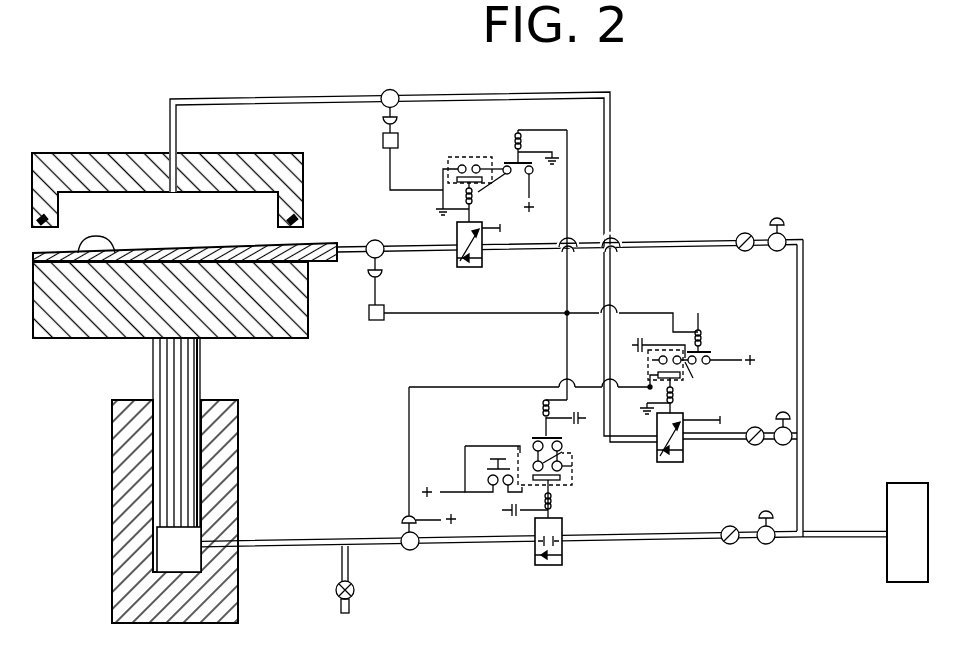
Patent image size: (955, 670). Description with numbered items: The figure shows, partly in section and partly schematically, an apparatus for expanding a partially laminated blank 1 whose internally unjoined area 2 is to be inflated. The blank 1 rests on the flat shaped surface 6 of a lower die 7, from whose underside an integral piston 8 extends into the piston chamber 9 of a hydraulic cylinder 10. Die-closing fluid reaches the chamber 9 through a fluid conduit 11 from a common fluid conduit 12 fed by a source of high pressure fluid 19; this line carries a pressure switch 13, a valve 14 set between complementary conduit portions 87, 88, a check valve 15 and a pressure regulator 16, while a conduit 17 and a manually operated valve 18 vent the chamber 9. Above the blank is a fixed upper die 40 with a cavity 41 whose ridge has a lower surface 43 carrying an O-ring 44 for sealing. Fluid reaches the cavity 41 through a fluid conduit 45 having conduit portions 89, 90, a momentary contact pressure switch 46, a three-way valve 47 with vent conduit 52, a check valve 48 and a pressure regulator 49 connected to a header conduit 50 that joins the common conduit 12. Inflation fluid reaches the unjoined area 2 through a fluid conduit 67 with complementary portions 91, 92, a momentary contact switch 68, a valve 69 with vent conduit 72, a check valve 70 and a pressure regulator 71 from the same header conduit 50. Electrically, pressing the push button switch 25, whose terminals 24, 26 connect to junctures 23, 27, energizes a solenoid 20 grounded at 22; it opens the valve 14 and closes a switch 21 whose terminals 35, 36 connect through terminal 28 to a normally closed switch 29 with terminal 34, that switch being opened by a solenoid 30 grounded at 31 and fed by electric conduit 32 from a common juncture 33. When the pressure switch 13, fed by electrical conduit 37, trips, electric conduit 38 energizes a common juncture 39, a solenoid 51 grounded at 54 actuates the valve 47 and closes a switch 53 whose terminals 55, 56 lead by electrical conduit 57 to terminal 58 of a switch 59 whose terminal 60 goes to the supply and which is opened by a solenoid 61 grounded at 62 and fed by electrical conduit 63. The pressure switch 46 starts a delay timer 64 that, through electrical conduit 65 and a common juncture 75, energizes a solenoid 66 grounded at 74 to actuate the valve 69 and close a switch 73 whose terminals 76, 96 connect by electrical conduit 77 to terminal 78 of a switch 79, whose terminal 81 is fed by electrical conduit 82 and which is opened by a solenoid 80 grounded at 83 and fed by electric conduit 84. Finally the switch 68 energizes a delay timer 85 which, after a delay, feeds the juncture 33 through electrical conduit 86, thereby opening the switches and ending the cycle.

The blank 1 is at (151, 252).
The internally unjoined or partially laminated area 2 is at (96, 241).
The shaped surface 6 is at (36, 274).
The die 7 is at (58, 340).
The piston 8 is at (189, 376).
The piston chamber 9 is at (184, 554).
The hydraulic cylinder 10 is at (113, 491).
The fluid conduit 11 is at (282, 543).
The common fluid conduit 12 is at (840, 540).
The pressure switch 13 is at (411, 552).
The valve 14 is at (545, 566).
The check valve 15 is at (730, 546).
The pressure regulator 16 is at (766, 546).
The conduit 17 is at (342, 568).
The manually operated valve 18 is at (335, 597).
The source of high pressure fluid 19 is at (896, 583).
The solenoid 20 is at (552, 503).
The electric switch 21 is at (573, 480).
The ground 22 is at (509, 512).
The common juncture 23 is at (546, 497).
The terminal 24 is at (509, 457).
The manually operated push button switch 25 is at (497, 457).
The terminal 26 is at (489, 475).
The common juncture 27 is at (468, 494).
The terminal 28 is at (561, 448).
The electric switch 29 is at (535, 437).
The solenoid 30 is at (543, 405).
The ground 31 is at (584, 419).
The electric conduit 32 is at (565, 357).
The common juncture 33 is at (565, 315).
The terminal 34 is at (533, 448).
The terminal 35 is at (564, 462).
The terminal 36 is at (566, 467).
The electrical conduit 37 is at (425, 525).
The electric conduit 38 is at (457, 387).
The common juncture 39 is at (648, 388).
The upper die 40 is at (32, 178).
The die cavity 41 is at (141, 218).
The lower surface 43 is at (38, 228).
The O-ring 44 is at (292, 227).
The fluid conduit 45 is at (262, 101).
The momentary contact pressure switch 46 is at (390, 90).
The valve 47 is at (668, 463).
The check valve 48 is at (747, 447).
The pressure regulator 49 is at (781, 447).
The header conduit 50 is at (805, 372).
The solenoid 51 is at (675, 398).
The vent conduit 52 is at (719, 418).
The electrical switch 53 is at (668, 350).
The ground 54 is at (647, 418).
The terminal 55 is at (658, 360).
The terminal 56 is at (686, 376).
The electrical conduit 57 is at (690, 338).
The terminal 58 is at (695, 365).
The electrical switch 59 is at (714, 358).
The terminal 60 is at (709, 366).
The solenoid 61 is at (706, 334).
The ground 62 is at (638, 341).
The electrical conduit 63 is at (640, 312).
The delay timer 64 is at (383, 141).
The electrical conduit 65 is at (414, 192).
The solenoid 66 is at (473, 203).
The fluid conduit 67 is at (406, 254).
The momentary contact switch 68 is at (373, 241).
The valve 69 is at (467, 268).
The check valve 70 is at (740, 252).
The pressure regulator 71 is at (787, 226).
The vent conduit 72 is at (502, 229).
The switch 73 is at (455, 156).
The ground 74 is at (442, 220).
The common juncture 75 is at (441, 192).
The terminal 76 is at (452, 165).
The electrical conduit 77 is at (505, 162).
The terminal 78 is at (497, 186).
The electrical switch 79 is at (512, 161).
The solenoid 80 is at (515, 134).
The terminal 81 is at (527, 180).
The electrical conduit 82 is at (527, 197).
The ground 83 is at (548, 168).
The electric conduit 84 is at (553, 130).
The delay timer 85 is at (374, 322).
The electrical conduit 86 is at (457, 315).
The complementary fluid conduit portion 87 is at (476, 545).
The complementary fluid conduit portion 88 is at (622, 540).
The complementary fluid conduit portion 89 is at (612, 184).
The complementary fluid conduit portion 90 is at (704, 442).
The complementary portion 91 is at (354, 258).
The complementary portion 92 is at (672, 240).
The terminal 96 is at (472, 160).